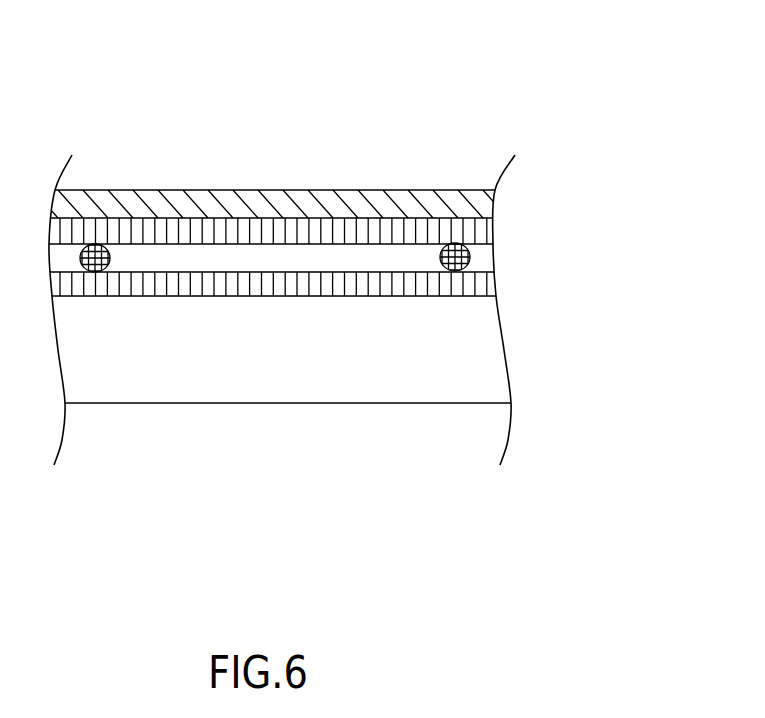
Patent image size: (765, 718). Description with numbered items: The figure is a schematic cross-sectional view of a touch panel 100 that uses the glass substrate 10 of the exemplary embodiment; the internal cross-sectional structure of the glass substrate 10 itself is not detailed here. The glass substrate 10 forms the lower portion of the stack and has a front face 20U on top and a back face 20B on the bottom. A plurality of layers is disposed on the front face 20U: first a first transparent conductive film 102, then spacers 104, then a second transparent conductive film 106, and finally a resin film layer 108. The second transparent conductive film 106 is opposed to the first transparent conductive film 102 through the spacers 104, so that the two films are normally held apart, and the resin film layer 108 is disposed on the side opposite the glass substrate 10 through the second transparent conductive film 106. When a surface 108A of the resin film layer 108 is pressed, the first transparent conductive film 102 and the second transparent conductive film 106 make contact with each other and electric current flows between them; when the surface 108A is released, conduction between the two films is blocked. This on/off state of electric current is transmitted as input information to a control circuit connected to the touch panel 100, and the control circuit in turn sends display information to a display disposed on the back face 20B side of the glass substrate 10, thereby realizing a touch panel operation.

The touch panel 100 is at (582, 128).
The resin film layer 108 is at (321, 158).
The surface of the resin film layer 108A is at (363, 190).
The second transparent conductive film 106 is at (480, 232).
The spacers 104 is at (470, 256).
The first transparent conductive film 102 is at (482, 284).
The glass substrate 10 is at (310, 328).
The front face of the glass substrate 20U is at (237, 292).
The back face of the glass substrate 20B is at (220, 404).